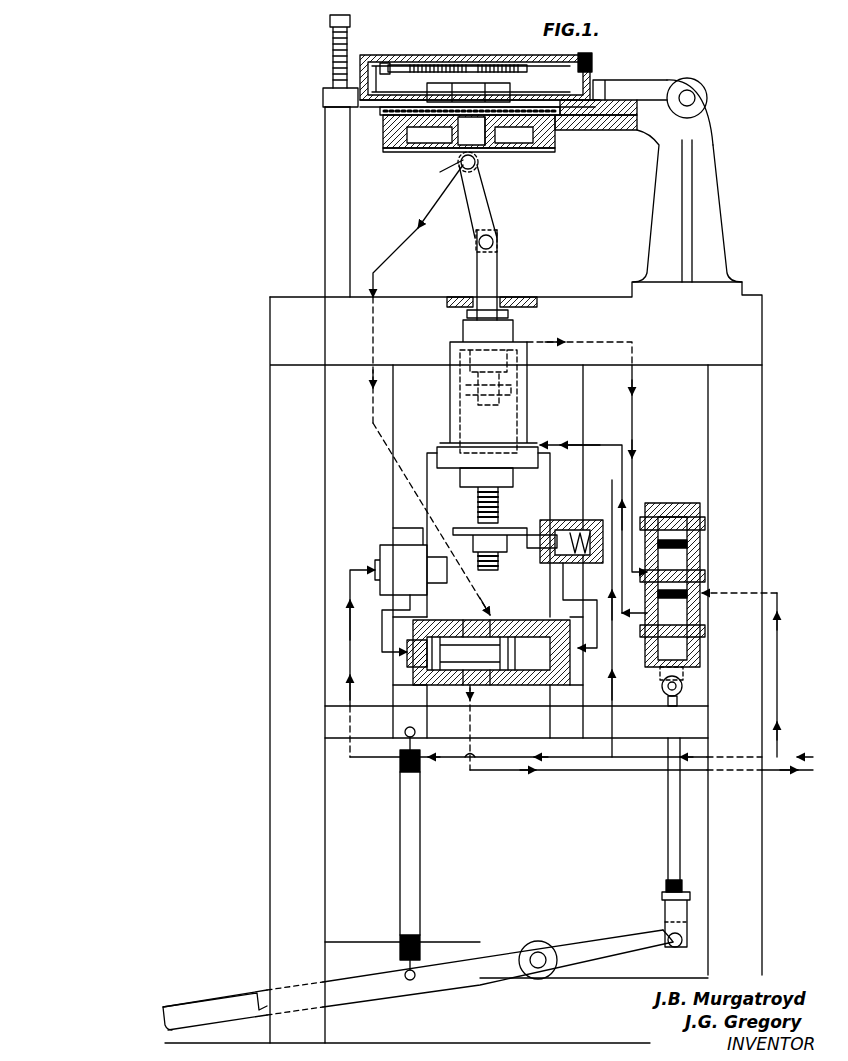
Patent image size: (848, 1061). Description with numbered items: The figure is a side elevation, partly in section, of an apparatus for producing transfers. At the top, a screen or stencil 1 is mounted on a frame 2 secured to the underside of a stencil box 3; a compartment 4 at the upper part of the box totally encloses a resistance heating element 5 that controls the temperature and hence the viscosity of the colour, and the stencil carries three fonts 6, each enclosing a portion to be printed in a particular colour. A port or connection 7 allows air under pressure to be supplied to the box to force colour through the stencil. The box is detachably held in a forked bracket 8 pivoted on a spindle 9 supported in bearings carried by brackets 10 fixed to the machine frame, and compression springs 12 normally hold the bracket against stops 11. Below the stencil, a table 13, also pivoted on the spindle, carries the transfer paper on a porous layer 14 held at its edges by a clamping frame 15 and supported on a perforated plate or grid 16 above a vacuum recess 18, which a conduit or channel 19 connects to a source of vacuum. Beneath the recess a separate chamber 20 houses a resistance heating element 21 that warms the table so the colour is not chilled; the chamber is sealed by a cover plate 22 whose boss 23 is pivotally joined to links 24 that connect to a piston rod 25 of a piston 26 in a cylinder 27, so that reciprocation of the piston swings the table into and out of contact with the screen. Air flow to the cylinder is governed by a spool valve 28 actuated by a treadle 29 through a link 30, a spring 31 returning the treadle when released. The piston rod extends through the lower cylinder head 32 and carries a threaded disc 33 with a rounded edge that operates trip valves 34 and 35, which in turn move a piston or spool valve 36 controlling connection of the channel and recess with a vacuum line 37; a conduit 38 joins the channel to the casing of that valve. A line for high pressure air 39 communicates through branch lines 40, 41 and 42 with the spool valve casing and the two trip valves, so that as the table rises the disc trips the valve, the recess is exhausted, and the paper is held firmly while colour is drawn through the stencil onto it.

The screen or stencil 1 is at (390, 102).
The frame 2 is at (385, 108).
The stencil box 3 is at (368, 60).
The compartment 4 is at (528, 60).
The resistance heating element 5 is at (425, 64).
The fonts 6 is at (500, 83).
The port or connection 7 is at (592, 62).
The forked bracket 8 is at (642, 80).
The spindle 9 is at (690, 95).
The brackets 10 is at (705, 140).
The stops 11 is at (334, 173).
The compression springs 12 is at (328, 62).
The table 13 is at (570, 132).
The layer 14 is at (530, 135).
The clamping frame 15 is at (600, 116).
The perforated plate or grid 16 is at (400, 148).
The vacuum recess 18 is at (490, 148).
The conduit or channel 19 is at (460, 160).
The chamber 20 is at (420, 140).
The resistance heating element 21 is at (430, 145).
The cover plate 22 is at (452, 172).
The boss 23 is at (495, 240).
The links 24 is at (472, 205).
The piston rod 25 is at (490, 270).
The piston 26 is at (517, 392).
The cylinder 27 is at (450, 392).
The spool valve 28 is at (672, 565).
The treadle 29 is at (490, 970).
The link 30 is at (666, 853).
The spring 31 is at (421, 852).
The lower cylinder head 32 is at (507, 470).
The disc 33 is at (518, 536).
The trip valve 34 is at (575, 520).
The trip valve 35 is at (430, 580).
The piston or spool valve 36 is at (515, 662).
The vacuum line 37 is at (782, 772).
The conduit 38 is at (372, 425).
The line for high pressure air 39 is at (795, 757).
The branch line 40 is at (778, 645).
The branch line 41 is at (613, 643).
The branch line 42 is at (350, 642).